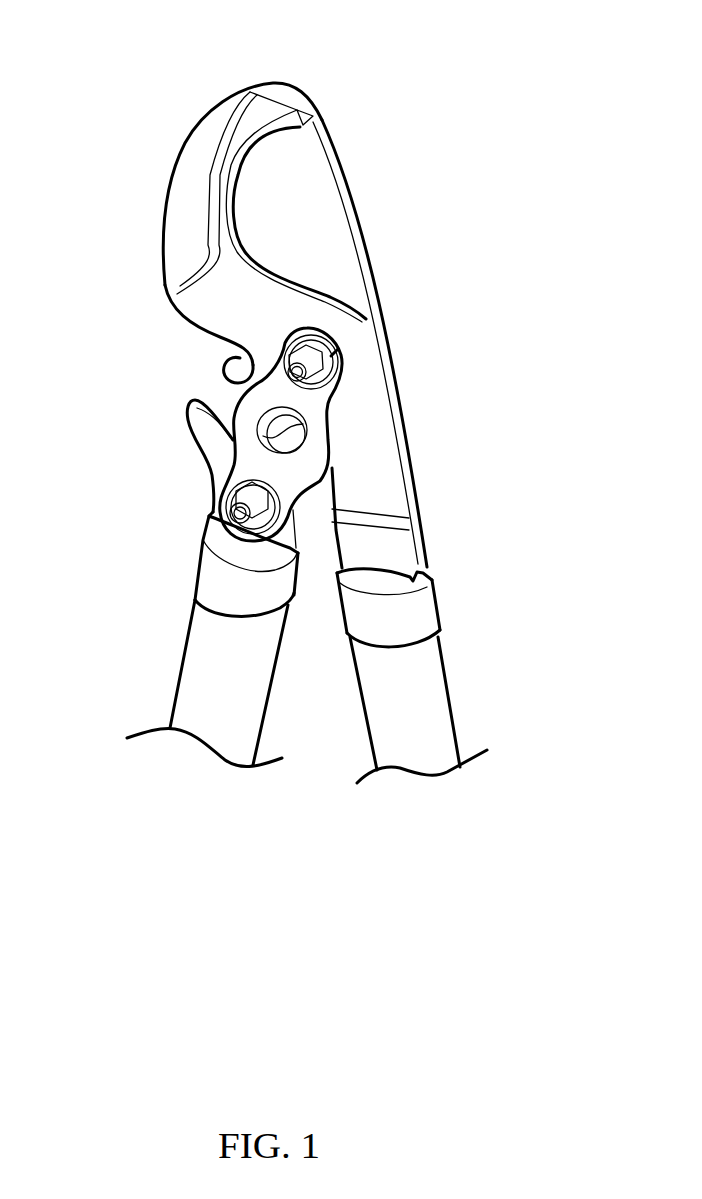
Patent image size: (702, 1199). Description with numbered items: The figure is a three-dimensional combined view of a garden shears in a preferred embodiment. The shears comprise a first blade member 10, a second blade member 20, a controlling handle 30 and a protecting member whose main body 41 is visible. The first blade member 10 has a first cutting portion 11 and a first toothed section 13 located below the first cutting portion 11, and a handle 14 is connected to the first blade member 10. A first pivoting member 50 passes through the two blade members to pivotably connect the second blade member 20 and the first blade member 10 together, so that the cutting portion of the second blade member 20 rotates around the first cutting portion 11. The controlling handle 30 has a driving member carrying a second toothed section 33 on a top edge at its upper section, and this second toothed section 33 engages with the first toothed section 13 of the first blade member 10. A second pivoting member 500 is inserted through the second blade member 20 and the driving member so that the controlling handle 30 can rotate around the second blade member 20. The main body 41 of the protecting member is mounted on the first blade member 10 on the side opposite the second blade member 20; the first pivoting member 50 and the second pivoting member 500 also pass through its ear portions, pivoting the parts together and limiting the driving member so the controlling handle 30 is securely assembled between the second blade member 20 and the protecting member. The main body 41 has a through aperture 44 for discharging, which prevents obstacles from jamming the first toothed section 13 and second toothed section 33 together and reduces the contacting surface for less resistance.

The first blade member 10 is at (179, 113).
The first cutting portion 11 is at (228, 204).
The first toothed section 13 is at (235, 363).
The second blade member 20 is at (361, 177).
The main body 41 is at (322, 428).
The through aperture 44 is at (318, 444).
The first pivoting member 50 is at (338, 352).
The second pivoting member 500 is at (207, 506).
The second toothed section 33 is at (198, 418).
The controlling handle 30 is at (152, 678).
The handle 14 is at (440, 724).